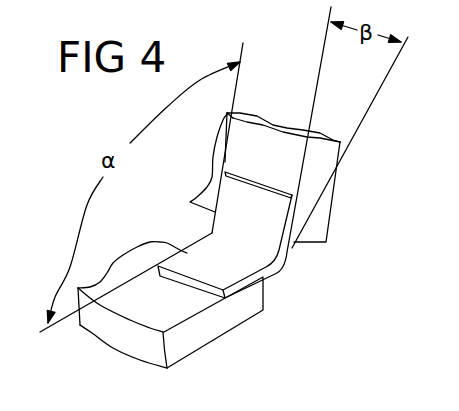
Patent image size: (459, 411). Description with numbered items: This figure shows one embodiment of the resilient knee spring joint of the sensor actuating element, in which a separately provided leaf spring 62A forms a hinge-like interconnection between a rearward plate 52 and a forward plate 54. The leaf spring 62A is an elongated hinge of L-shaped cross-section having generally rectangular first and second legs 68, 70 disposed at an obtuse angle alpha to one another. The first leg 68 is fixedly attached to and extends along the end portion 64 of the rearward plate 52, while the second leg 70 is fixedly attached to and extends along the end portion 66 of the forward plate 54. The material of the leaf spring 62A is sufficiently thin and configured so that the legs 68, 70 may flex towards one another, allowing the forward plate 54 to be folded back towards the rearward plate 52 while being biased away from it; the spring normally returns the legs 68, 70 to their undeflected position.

The rearward plate 52 is at (215, 370).
The forward plate 54 is at (320, 160).
The leaf spring 62A is at (289, 267).
The longitudinal end 64 is at (252, 307).
The longitudinal end 66 is at (318, 227).
The first leg 68 is at (203, 268).
The second leg 70 is at (253, 224).